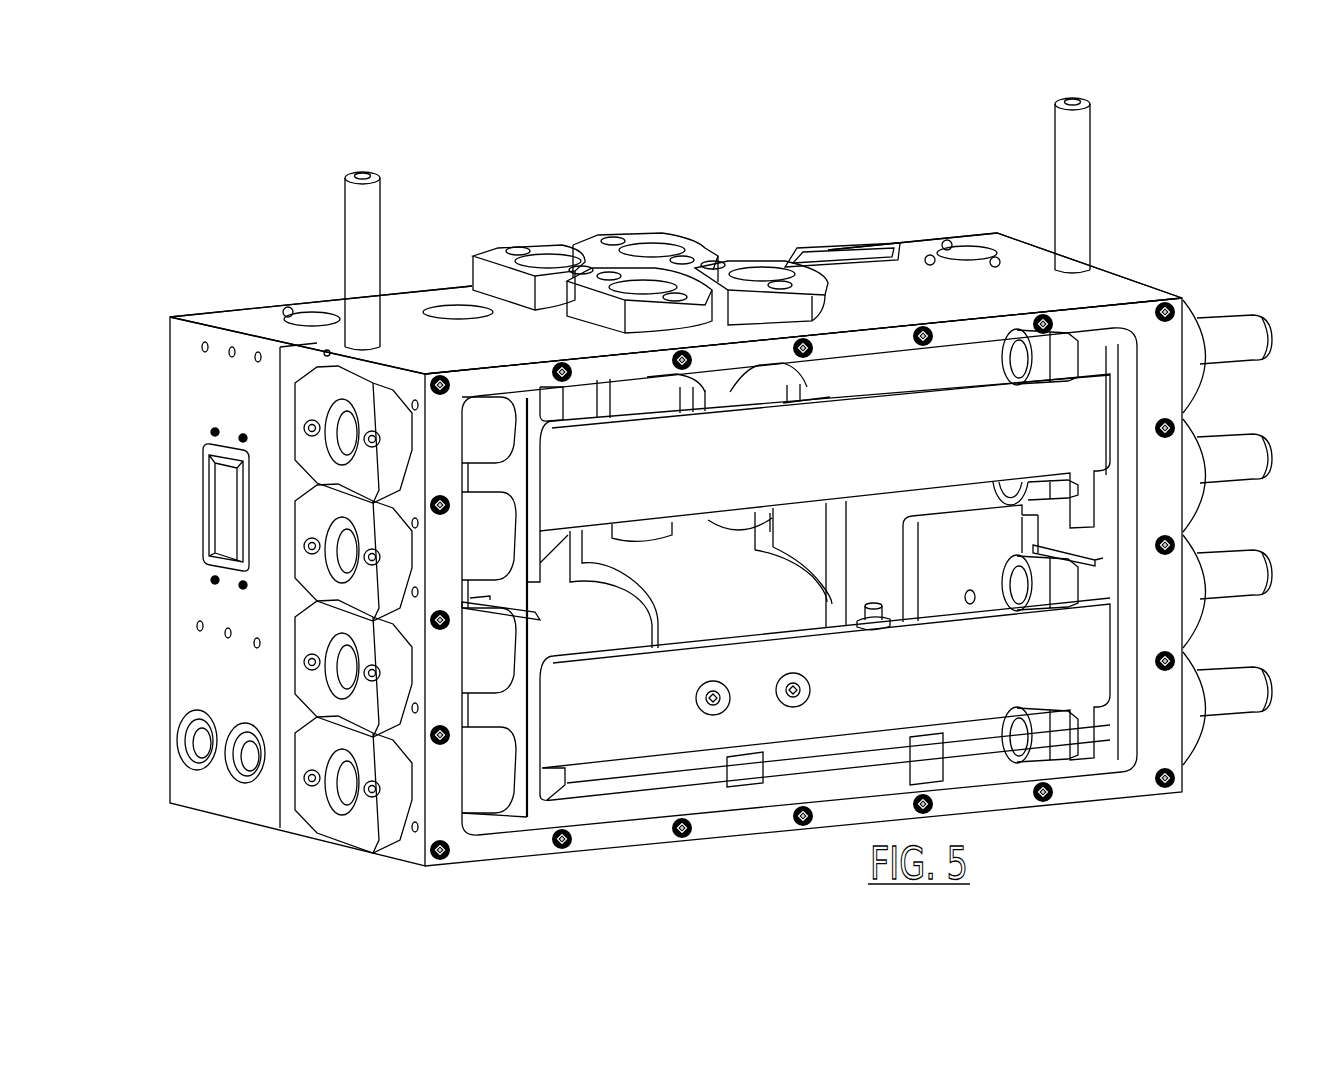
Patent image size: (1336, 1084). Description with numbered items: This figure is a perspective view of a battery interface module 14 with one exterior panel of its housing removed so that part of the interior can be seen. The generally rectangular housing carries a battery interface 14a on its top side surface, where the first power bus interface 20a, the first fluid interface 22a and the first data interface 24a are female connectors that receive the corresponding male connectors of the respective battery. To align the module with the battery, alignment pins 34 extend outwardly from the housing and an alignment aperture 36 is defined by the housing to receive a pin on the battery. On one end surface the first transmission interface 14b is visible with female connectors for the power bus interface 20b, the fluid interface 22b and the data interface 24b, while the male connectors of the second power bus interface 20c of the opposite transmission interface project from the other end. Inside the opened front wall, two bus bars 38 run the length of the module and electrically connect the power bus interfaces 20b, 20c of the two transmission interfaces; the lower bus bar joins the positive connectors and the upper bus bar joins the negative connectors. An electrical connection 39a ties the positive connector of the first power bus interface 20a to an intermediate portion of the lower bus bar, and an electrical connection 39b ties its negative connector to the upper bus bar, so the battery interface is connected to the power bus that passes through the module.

The battery interface module 14 is at (704, 150).
The battery interface 14a is at (1040, 290).
The first transmission interface 14b is at (410, 834).
The first power bus interface 20a is at (598, 268).
The power bus interface 20b is at (312, 483).
The second power bus interface 20c is at (1228, 353).
The first fluid interface 22a is at (435, 311).
The fluid interface 22b is at (242, 764).
The first data interface 24a is at (843, 249).
The data interface 24b is at (230, 510).
The alignment pin 34 is at (372, 195).
The alignment aperture 36 is at (316, 318).
The bus bar 38 is at (586, 487).
The electrical connection 39a is at (830, 593).
The electrical connection 39b is at (947, 508).